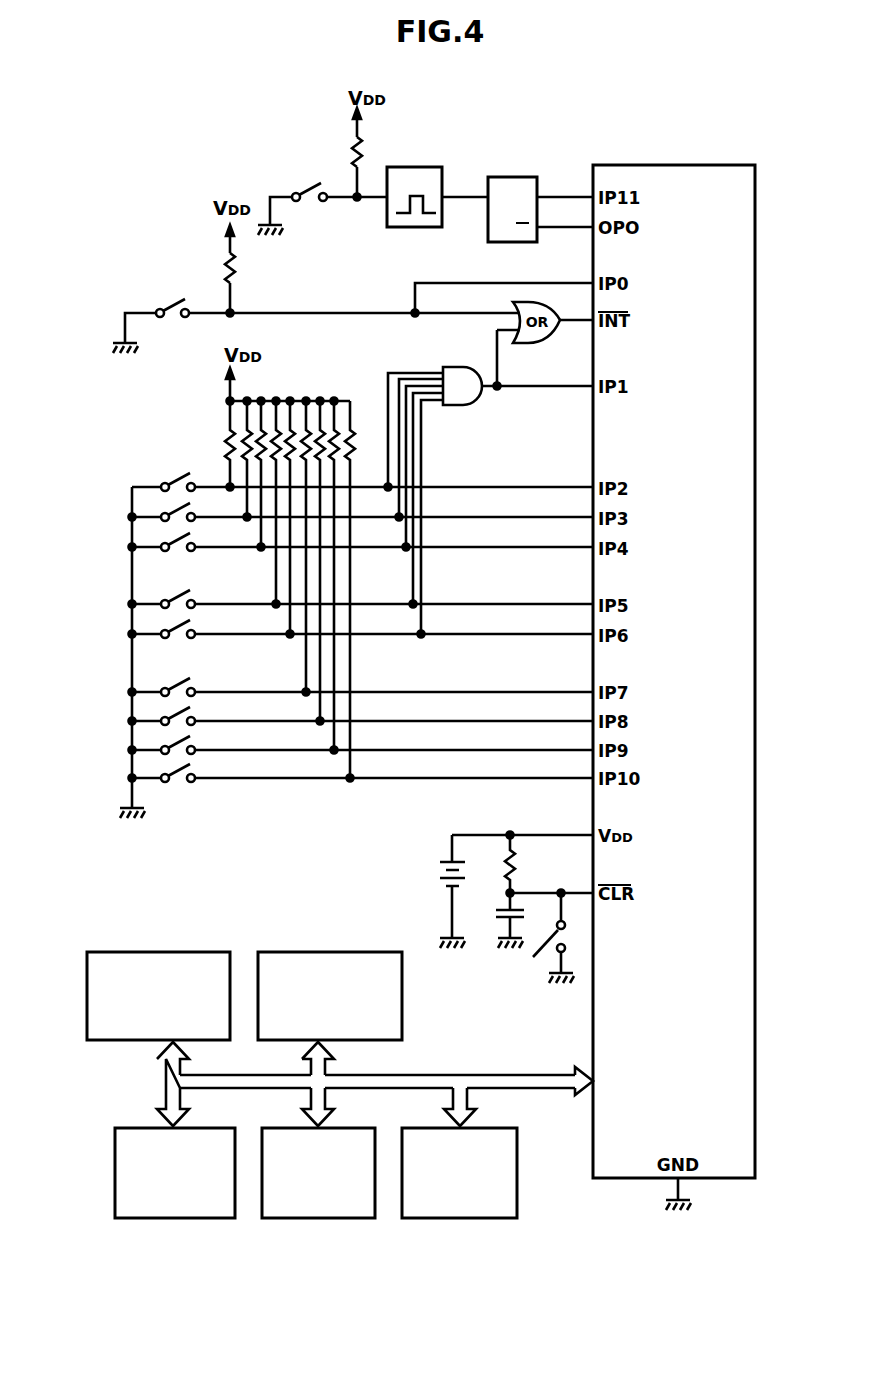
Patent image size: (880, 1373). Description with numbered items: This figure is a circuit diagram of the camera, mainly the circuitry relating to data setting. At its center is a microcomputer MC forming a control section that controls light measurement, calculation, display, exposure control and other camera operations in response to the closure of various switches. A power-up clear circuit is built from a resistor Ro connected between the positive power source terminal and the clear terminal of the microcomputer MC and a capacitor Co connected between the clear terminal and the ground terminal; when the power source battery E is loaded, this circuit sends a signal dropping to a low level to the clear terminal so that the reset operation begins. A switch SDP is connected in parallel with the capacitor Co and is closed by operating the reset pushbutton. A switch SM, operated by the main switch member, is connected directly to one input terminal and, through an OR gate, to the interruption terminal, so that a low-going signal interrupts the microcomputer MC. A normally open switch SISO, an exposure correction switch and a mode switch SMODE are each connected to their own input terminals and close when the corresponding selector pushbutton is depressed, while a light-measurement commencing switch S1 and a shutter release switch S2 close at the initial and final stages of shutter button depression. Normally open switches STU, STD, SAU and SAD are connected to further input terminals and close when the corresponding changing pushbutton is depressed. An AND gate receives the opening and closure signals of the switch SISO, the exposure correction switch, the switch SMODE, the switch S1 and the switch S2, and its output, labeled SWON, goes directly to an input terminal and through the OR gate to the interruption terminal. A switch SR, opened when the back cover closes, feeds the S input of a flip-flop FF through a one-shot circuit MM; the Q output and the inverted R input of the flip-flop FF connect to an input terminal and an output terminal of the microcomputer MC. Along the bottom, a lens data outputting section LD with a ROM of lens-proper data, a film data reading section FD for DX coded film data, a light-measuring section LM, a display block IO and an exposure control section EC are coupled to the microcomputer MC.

The switch SR is at (292, 198).
The one-shot circuit MM is at (428, 174).
The flip-flop FF is at (514, 178).
The switch SM is at (151, 317).
The switch-on signal (AND gate output) SWON is at (523, 390).
The switch SISO is at (326, 486).
The switch SMODE is at (326, 546).
The light-measurement commencing switch S1 is at (341, 603).
The shutter release switch S2 is at (341, 633).
The switch STU is at (336, 691).
The switch STD is at (336, 720).
The switch SAU is at (336, 749).
The switch SAD is at (336, 777).
The power source battery E is at (438, 868).
The resistor Ro is at (529, 865).
The capacitor Co is at (496, 924).
The switch SDP is at (539, 940).
The microcomputer MC is at (735, 928).
The light-measuring section LM is at (160, 960).
The lens data outputting section LD is at (326, 956).
The film data reading section FD is at (185, 1208).
The display circuit IO is at (330, 1205).
The exposure control section EC is at (476, 1208).